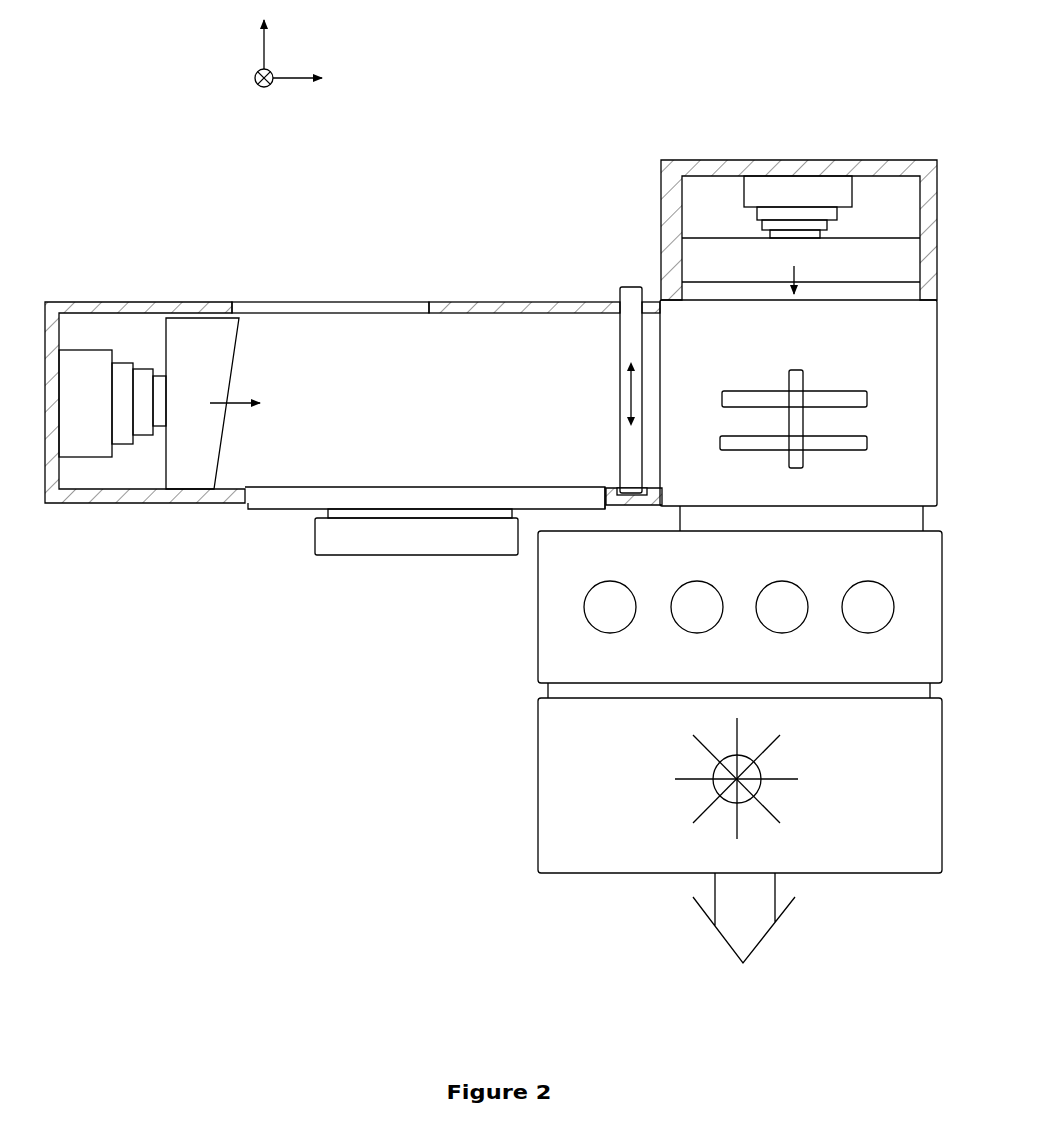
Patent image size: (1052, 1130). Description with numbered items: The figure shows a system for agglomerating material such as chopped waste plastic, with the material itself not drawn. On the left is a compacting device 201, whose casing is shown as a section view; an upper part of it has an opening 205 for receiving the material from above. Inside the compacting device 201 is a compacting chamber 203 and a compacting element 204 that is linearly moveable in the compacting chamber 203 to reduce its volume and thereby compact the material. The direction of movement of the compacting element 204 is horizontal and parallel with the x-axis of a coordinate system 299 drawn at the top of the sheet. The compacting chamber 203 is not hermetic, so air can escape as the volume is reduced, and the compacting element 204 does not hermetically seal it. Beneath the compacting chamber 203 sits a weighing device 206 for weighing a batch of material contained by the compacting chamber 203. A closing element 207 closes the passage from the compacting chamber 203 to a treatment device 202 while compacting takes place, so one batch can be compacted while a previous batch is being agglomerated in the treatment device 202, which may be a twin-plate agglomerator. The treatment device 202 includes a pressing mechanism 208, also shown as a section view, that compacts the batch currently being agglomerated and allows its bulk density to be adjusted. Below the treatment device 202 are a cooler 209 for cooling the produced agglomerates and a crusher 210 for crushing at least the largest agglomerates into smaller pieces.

The coordinate system 299 is at (312, 60).
The compacting device 201 is at (482, 302).
The treatment device 202 is at (862, 349).
The compacting chamber 203 is at (447, 417).
The compacting element 204 is at (180, 369).
The opening 205 is at (320, 302).
The weighing device 206 is at (302, 509).
The closing element 207 is at (619, 295).
The pressing mechanism 208 is at (661, 193).
The cooler 209 is at (880, 572).
The crusher 210 is at (876, 742).